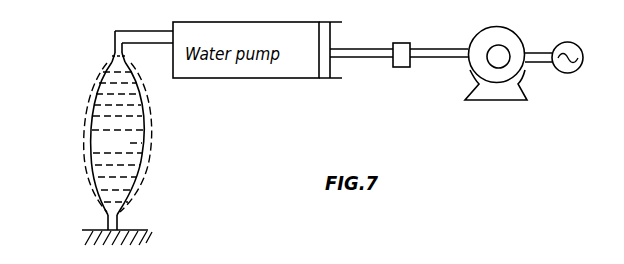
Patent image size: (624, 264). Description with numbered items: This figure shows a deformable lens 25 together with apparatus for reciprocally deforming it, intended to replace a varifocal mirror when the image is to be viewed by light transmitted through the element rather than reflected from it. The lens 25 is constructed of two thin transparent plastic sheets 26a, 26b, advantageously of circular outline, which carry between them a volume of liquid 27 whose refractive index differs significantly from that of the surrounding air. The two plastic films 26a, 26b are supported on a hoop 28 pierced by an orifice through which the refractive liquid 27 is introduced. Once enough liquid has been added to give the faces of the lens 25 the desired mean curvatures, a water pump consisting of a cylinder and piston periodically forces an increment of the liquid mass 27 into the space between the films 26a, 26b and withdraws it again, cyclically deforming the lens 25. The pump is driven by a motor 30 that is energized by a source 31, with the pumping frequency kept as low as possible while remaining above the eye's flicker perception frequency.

The deformable lens 25 is at (172, 191).
The thin transparent plastic sheet 26a is at (96, 141).
The thin transparent plastic sheet 26b is at (148, 142).
The liquid 27 is at (127, 143).
The hoop 28 is at (115, 45).
The motor 30 is at (477, 78).
The source 31 is at (565, 42).